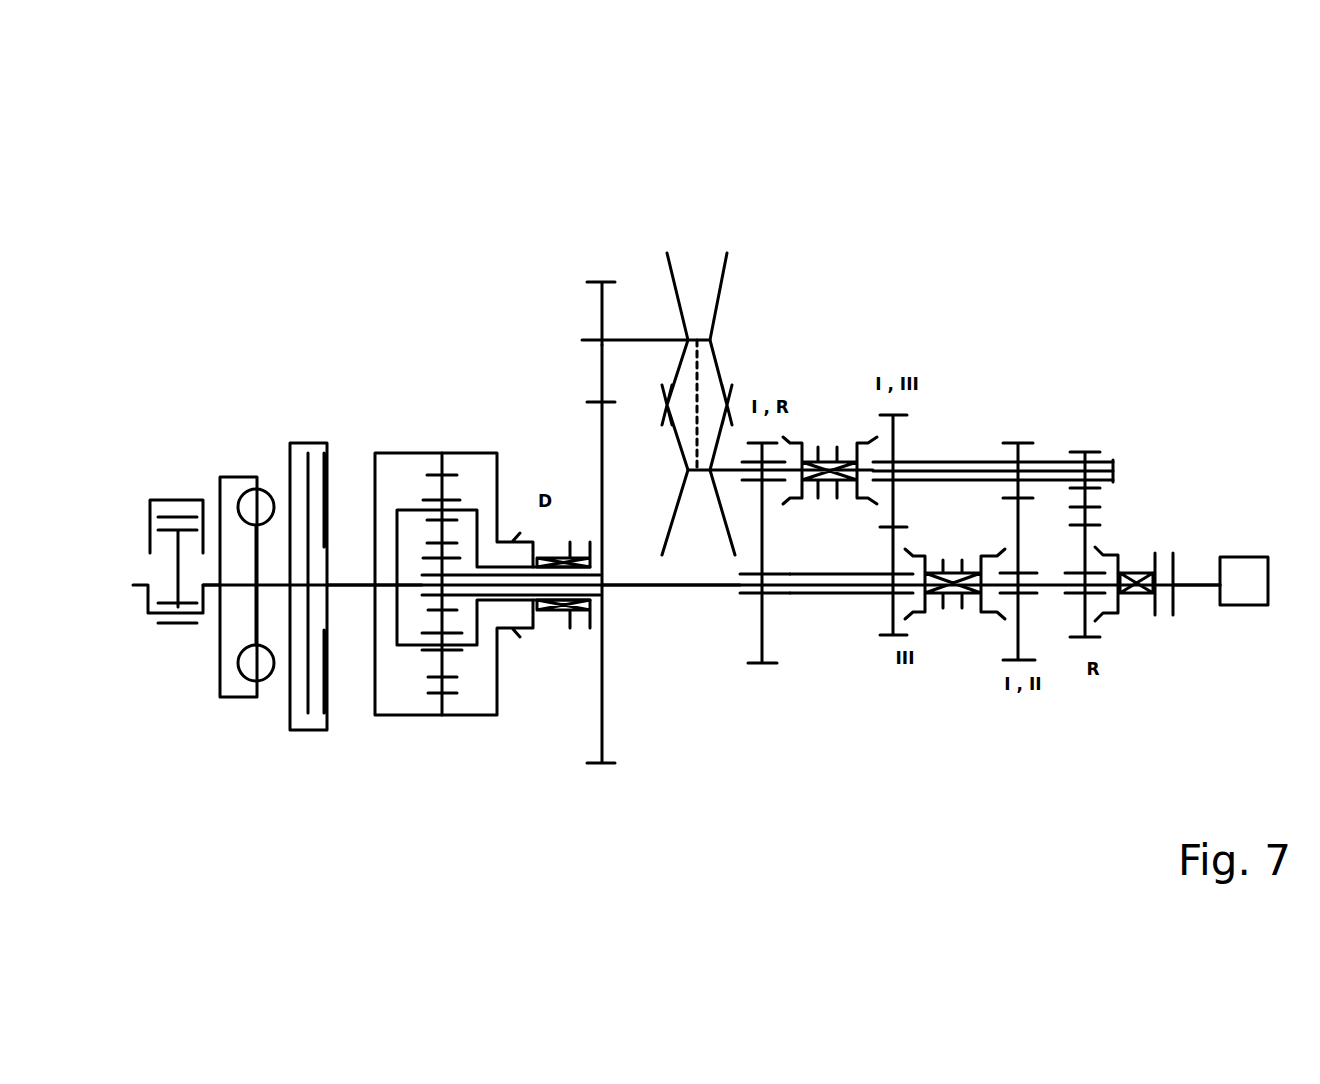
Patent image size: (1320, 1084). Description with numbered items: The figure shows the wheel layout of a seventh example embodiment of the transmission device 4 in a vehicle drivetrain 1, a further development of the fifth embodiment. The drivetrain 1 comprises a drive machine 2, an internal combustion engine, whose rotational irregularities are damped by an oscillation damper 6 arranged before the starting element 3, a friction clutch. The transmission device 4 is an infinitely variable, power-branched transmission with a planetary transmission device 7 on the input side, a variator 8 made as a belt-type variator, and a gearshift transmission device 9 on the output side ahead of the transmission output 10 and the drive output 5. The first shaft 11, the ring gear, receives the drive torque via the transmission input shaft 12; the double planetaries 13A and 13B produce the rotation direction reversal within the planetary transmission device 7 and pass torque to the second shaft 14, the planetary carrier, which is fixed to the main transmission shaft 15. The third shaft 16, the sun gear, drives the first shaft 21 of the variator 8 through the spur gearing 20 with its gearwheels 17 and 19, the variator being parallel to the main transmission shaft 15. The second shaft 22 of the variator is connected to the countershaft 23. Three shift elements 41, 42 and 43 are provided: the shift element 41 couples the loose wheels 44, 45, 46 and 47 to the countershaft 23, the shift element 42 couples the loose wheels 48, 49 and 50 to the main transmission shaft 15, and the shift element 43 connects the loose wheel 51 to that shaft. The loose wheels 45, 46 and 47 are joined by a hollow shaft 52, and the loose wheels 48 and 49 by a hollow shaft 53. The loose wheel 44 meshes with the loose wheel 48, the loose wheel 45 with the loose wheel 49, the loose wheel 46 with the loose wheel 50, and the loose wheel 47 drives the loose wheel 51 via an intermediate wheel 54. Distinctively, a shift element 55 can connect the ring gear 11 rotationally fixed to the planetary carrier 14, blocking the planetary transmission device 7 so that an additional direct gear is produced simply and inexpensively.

The vehicle drivetrain 1 is at (322, 295).
The drive machine 2 is at (155, 493).
The starting element 3 is at (298, 433).
The transmission device 4 is at (718, 228).
The drive output 5 is at (1243, 582).
The oscillation damper 6 is at (233, 470).
The planetary transmission device 7 is at (450, 444).
The variator 8 is at (637, 233).
The gearshift transmission device 9 is at (1047, 413).
The transmission output 10 is at (1198, 583).
The first shaft 11 is at (413, 453).
The transmission input shaft 12 is at (350, 593).
The double planetary 13A is at (440, 623).
The double planetary 13B is at (442, 490).
The second shaft 14 is at (412, 645).
The main transmission shaft 15 is at (682, 593).
The third shaft 16 is at (422, 575).
The gearwheel 17 is at (602, 763).
The gearwheel 19 is at (590, 340).
The spur gearing 20 is at (582, 369).
The first shaft 21 is at (595, 340).
The second shaft 22 is at (697, 350).
The countershaft 23 is at (1113, 462).
The shift element 41 is at (817, 432).
The shift element 42 is at (952, 620).
The shift element 43 is at (1142, 612).
The loose wheel 44 is at (750, 443).
The loose wheel 45 is at (888, 414).
The loose wheel 46 is at (1010, 443).
The loose wheel 47 is at (1085, 452).
The loose wheel 48 is at (755, 663).
The loose wheel 49 is at (885, 636).
The loose wheel 50 is at (1085, 640).
The loose wheel 51 is at (1018, 660).
The hollow shaft 52 is at (930, 458).
The hollow shaft 53 is at (818, 593).
The intermediate wheel 54 is at (1103, 507).
The shift element 55 is at (567, 648).